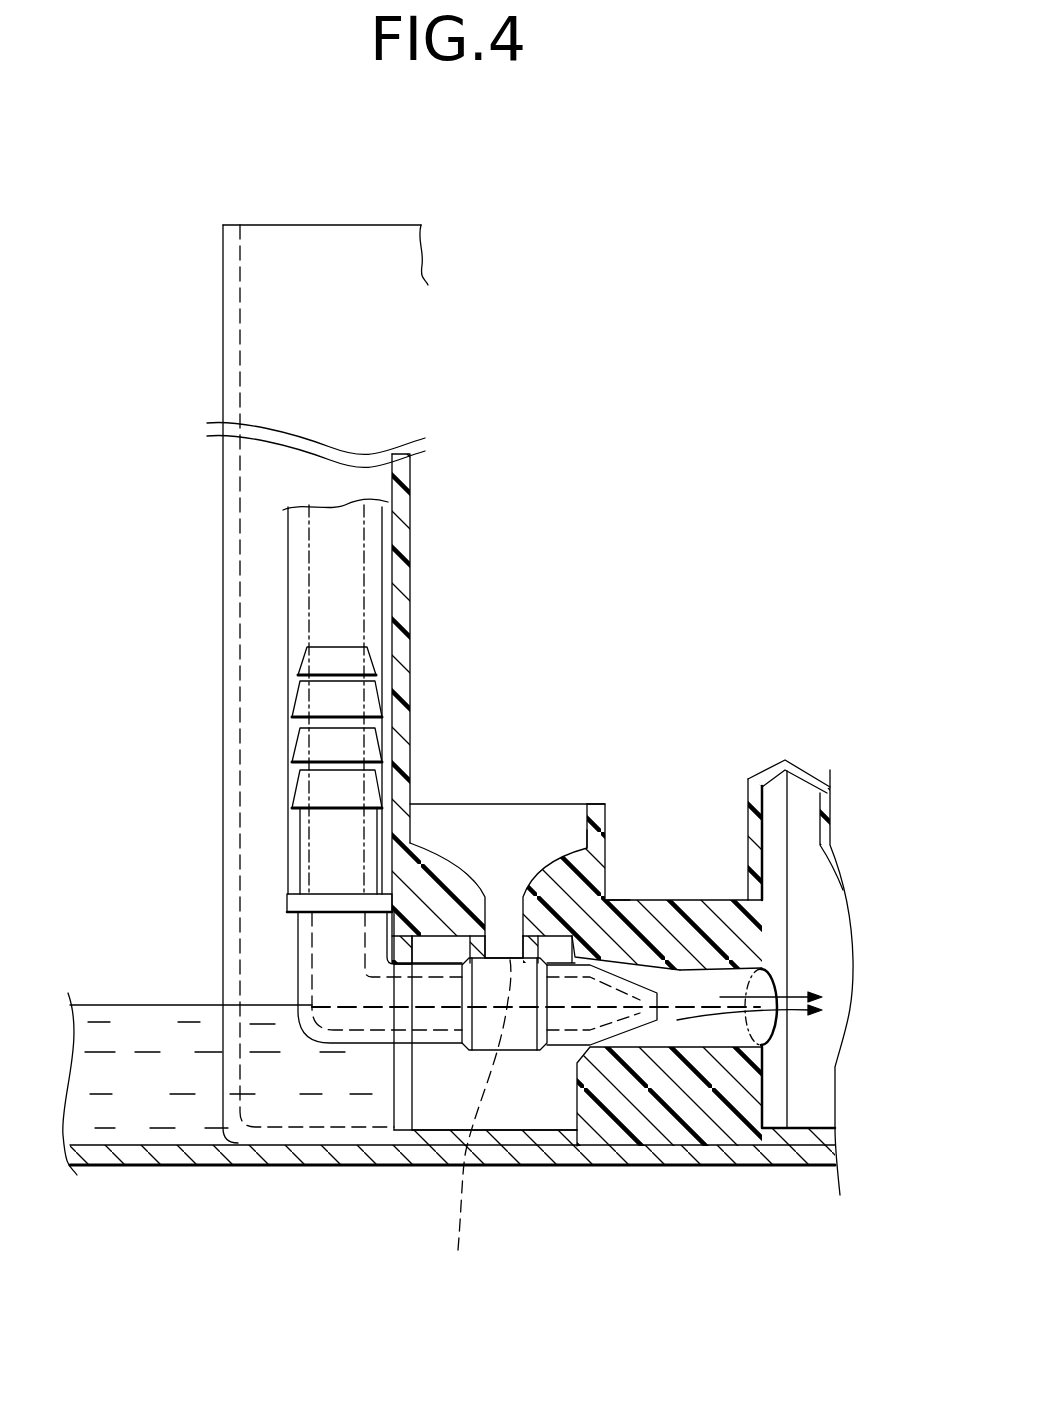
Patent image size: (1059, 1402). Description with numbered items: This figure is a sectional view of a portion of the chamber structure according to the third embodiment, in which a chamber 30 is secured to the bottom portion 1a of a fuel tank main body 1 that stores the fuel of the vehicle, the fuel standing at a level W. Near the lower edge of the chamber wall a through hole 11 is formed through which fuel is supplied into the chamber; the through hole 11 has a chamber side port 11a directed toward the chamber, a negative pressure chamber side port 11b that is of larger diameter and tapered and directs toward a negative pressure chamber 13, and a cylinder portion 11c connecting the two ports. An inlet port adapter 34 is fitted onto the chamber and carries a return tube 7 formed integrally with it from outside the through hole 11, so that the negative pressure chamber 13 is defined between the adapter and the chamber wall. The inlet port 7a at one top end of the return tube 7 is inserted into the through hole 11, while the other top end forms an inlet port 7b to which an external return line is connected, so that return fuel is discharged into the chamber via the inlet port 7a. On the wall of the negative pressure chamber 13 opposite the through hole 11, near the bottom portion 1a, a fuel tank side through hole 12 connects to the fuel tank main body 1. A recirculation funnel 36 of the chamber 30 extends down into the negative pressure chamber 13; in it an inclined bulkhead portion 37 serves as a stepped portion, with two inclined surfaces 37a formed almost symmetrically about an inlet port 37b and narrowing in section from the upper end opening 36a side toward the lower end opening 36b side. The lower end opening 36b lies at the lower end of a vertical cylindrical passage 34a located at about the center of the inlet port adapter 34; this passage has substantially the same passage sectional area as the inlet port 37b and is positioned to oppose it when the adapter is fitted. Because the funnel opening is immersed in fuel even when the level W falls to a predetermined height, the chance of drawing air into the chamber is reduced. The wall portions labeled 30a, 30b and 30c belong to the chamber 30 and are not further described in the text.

The fuel tank main body 1 is at (113, 1100).
The bottom portion 1a is at (182, 1128).
The return tube 7 is at (290, 942).
The inlet port 7a is at (650, 993).
The inlet port 7b is at (290, 700).
The through hole 11 is at (710, 980).
The chamber side port 11a is at (763, 968).
The negative pressure chamber side port 11b is at (585, 1052).
The cylinder portion 11c is at (710, 1037).
The fuel tank side through hole 12 is at (393, 1088).
The negative pressure chamber 13 is at (518, 1105).
The chamber 30 is at (214, 218).
The side wall of reservoir cup 30a is at (214, 762).
The top edge of reservoir cup 30b is at (386, 225).
The inner wall of reservoir cup 30c is at (225, 815).
The inlet port adapter 34 is at (526, 1154).
The vertical cylindrical passage 34a is at (492, 957).
The recirculation funnel 36 is at (616, 812).
The upper end opening 36a is at (584, 812).
The lower end opening 36b is at (471, 1126).
The inclined bulkhead portion 37 is at (610, 732).
The inclined surfaces 37a is at (442, 880).
The inlet port 37b is at (513, 910).
The level of fuel W is at (104, 1003).